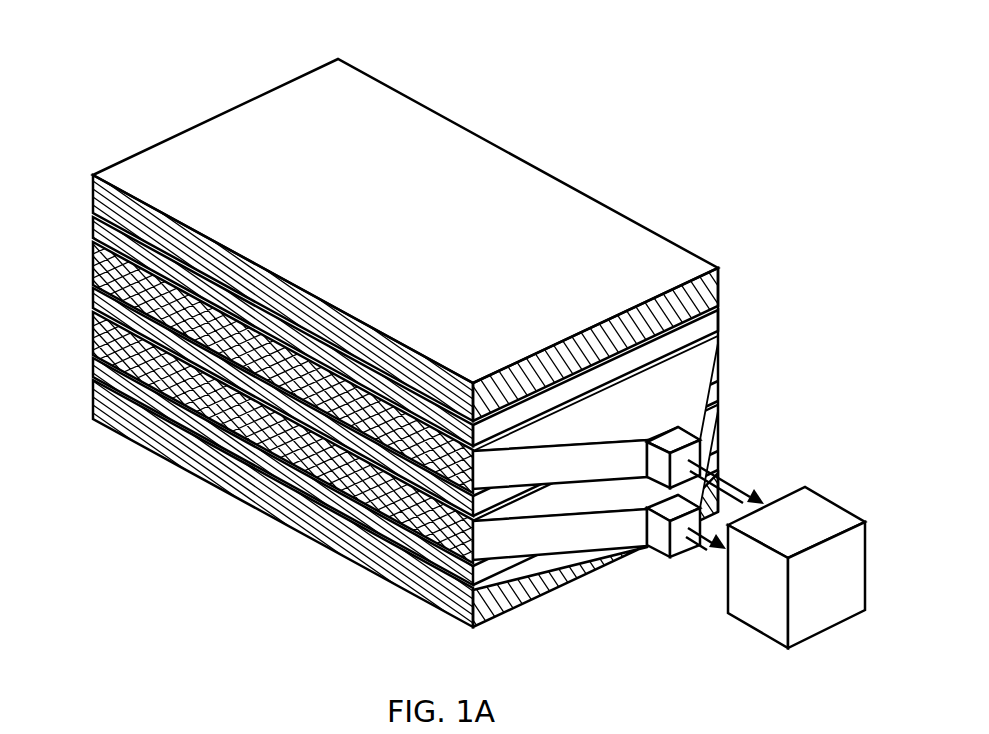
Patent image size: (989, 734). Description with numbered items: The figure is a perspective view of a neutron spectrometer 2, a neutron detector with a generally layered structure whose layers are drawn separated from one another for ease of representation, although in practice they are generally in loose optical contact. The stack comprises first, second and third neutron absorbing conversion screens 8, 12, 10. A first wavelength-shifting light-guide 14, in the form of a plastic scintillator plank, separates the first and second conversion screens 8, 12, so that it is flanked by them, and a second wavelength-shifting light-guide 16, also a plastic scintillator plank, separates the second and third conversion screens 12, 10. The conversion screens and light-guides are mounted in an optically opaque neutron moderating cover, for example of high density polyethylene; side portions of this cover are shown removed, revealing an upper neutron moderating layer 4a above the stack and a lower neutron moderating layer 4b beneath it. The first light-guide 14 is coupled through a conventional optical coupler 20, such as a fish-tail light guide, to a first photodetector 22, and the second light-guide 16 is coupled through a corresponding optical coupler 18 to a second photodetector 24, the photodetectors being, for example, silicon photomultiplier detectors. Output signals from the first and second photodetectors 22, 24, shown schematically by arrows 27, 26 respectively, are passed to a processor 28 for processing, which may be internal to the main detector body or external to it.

The neutron spectrometer 2 is at (402, 367).
The upper neutron moderating layer 4a is at (92, 192).
The lower neutron moderating layer 4b is at (92, 400).
The first neutron absorbing conversion screen 8 is at (92, 226).
The third neutron absorbing conversion screen 10 is at (92, 364).
The second neutron absorbing conversion screen 12 is at (92, 298).
The first wavelength-shifting light-guide 14 is at (92, 262).
The second wavelength-shifting light-guide 16 is at (92, 334).
The optical coupler 18 is at (566, 538).
The optical coupler 20 is at (720, 342).
The first photodetector 22 is at (676, 442).
The second photodetector 24 is at (657, 540).
The output signal arrow 26 is at (710, 552).
The output signal arrow 27 is at (737, 481).
The processor 28 is at (754, 630).